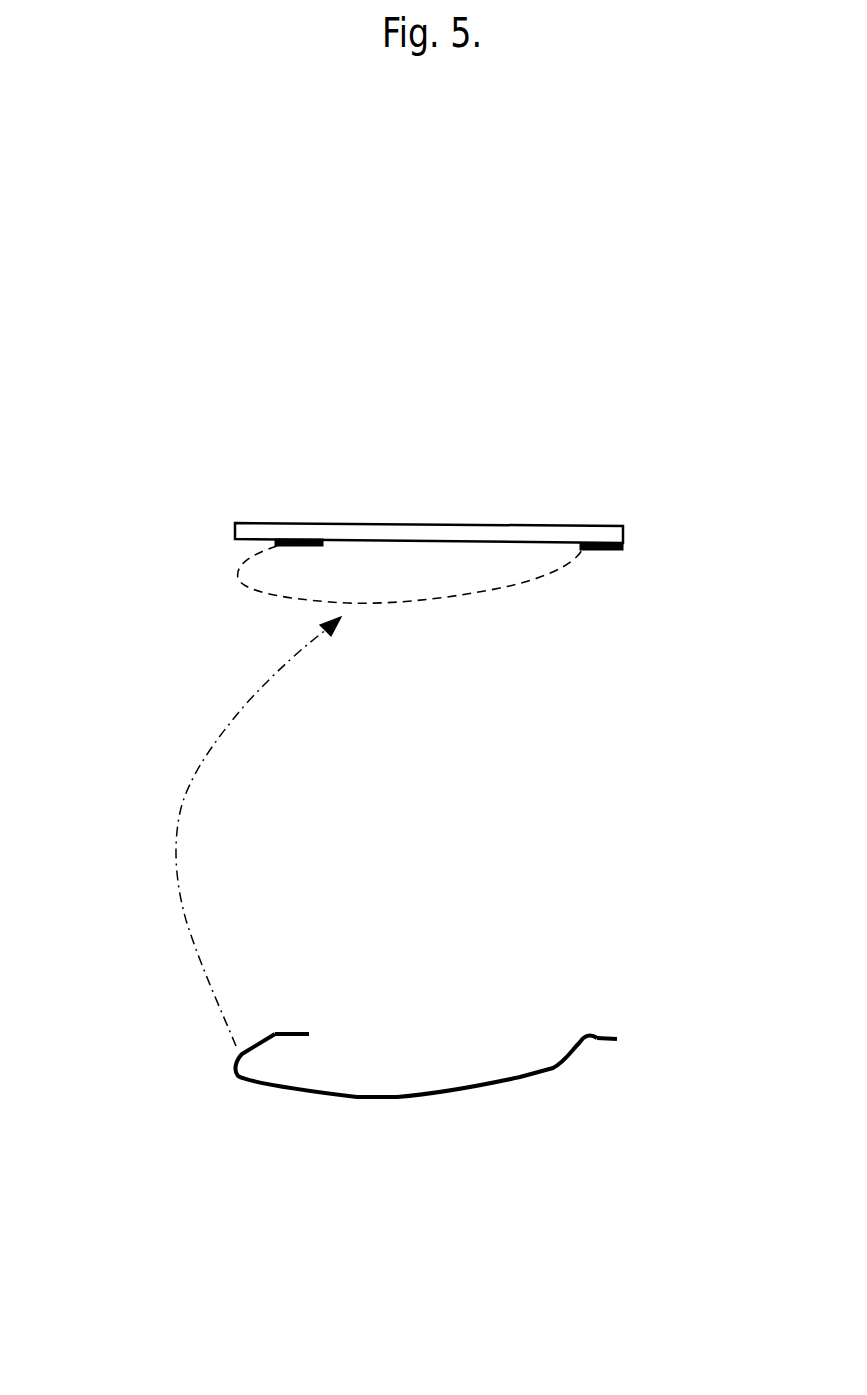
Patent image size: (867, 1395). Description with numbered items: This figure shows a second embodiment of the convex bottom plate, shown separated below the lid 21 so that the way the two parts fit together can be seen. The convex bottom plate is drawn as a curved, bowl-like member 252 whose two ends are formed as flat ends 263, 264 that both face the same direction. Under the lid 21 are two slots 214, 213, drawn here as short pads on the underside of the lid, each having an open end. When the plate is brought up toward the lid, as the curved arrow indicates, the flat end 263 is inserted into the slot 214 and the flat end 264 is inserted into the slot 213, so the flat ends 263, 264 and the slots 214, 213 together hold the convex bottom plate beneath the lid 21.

The lid 21 is at (380, 523).
The slot 213 is at (595, 550).
The slot 214 is at (305, 546).
The housing wall 252 is at (395, 1096).
The flat end 263 is at (305, 1031).
The flat end 264 is at (602, 1036).